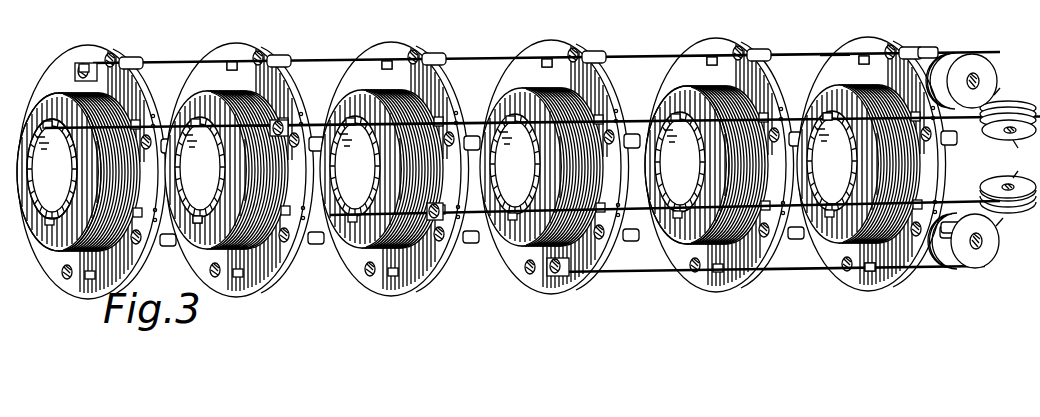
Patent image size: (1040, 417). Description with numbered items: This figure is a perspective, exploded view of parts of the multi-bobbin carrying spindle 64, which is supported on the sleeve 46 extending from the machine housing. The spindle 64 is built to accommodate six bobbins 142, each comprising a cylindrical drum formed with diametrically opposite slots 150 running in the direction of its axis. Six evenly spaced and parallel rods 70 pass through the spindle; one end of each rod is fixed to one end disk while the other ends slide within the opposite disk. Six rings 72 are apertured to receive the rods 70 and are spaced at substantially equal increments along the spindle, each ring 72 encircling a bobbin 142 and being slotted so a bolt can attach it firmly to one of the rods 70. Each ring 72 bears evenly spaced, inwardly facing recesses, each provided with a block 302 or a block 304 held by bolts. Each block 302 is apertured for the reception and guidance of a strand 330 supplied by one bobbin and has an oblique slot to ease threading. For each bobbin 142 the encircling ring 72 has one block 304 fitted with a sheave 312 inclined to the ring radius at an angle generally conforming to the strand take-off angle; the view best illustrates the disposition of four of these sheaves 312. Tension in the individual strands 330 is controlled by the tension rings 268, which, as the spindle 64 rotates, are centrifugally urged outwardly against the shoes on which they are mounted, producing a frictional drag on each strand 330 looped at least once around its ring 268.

The sleeve 46 is at (192, 215).
The multi-bobbin carrying spindle 64 is at (837, 47).
The rods 70 is at (282, 60).
The rings 72 is at (96, 53).
The bobbin 142 is at (33, 130).
The slots 150 is at (56, 226).
The tension ring 268 is at (984, 72).
The block 302 is at (236, 62).
The block 304 is at (80, 64).
The sheave 312 is at (78, 72).
The strand 330 is at (636, 57).